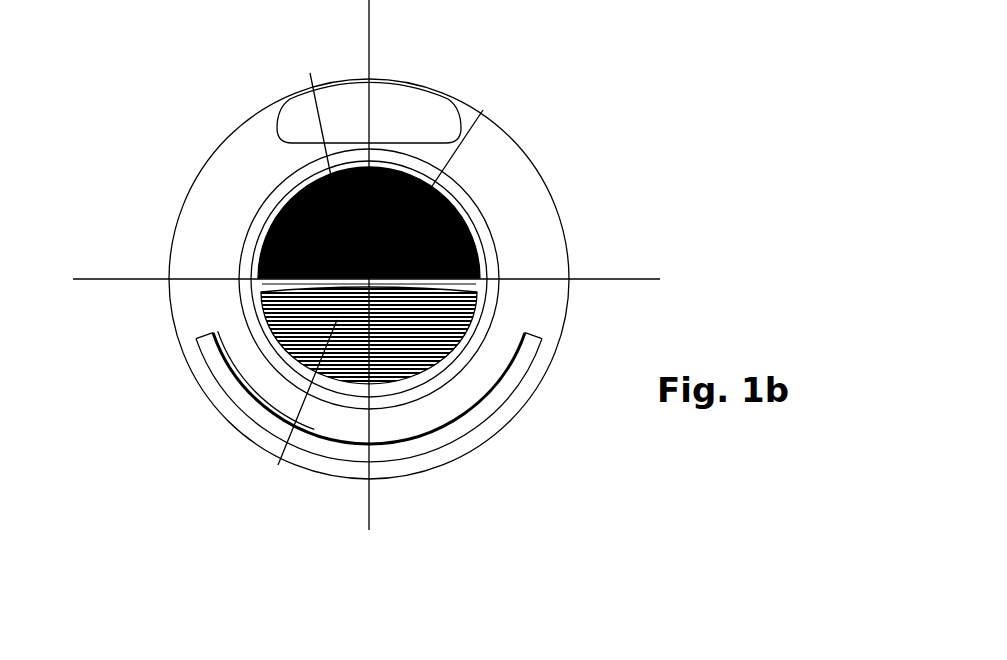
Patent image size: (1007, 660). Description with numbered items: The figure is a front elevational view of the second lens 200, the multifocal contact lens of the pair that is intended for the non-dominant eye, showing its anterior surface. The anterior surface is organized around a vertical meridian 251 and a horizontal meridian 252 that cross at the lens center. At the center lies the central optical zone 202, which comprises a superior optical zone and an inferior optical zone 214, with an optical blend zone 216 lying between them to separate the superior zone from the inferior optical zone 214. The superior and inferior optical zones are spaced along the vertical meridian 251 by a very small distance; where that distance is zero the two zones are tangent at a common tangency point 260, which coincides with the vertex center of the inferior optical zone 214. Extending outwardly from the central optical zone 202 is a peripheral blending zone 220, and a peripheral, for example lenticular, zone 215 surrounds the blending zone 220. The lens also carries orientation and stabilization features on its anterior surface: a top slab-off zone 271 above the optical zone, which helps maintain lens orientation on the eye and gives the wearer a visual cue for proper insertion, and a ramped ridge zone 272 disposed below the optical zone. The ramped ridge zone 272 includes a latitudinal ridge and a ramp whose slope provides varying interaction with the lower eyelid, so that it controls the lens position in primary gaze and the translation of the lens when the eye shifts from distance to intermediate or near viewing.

The second lens 200 is at (752, 162).
The central optical zone 202 is at (262, 248).
The inferior optical zone 214 is at (279, 272).
The peripheral zone 215 is at (215, 212).
The optical blend zone 216 is at (467, 283).
The peripheral blending zone 220 is at (463, 195).
The vertical meridian 251 is at (369, 512).
The horizontal meridian 252 is at (127, 279).
The common tangency point 260 is at (462, 163).
The top slab-off zone 271 is at (352, 110).
The ramped ridge zone 272 is at (445, 407).